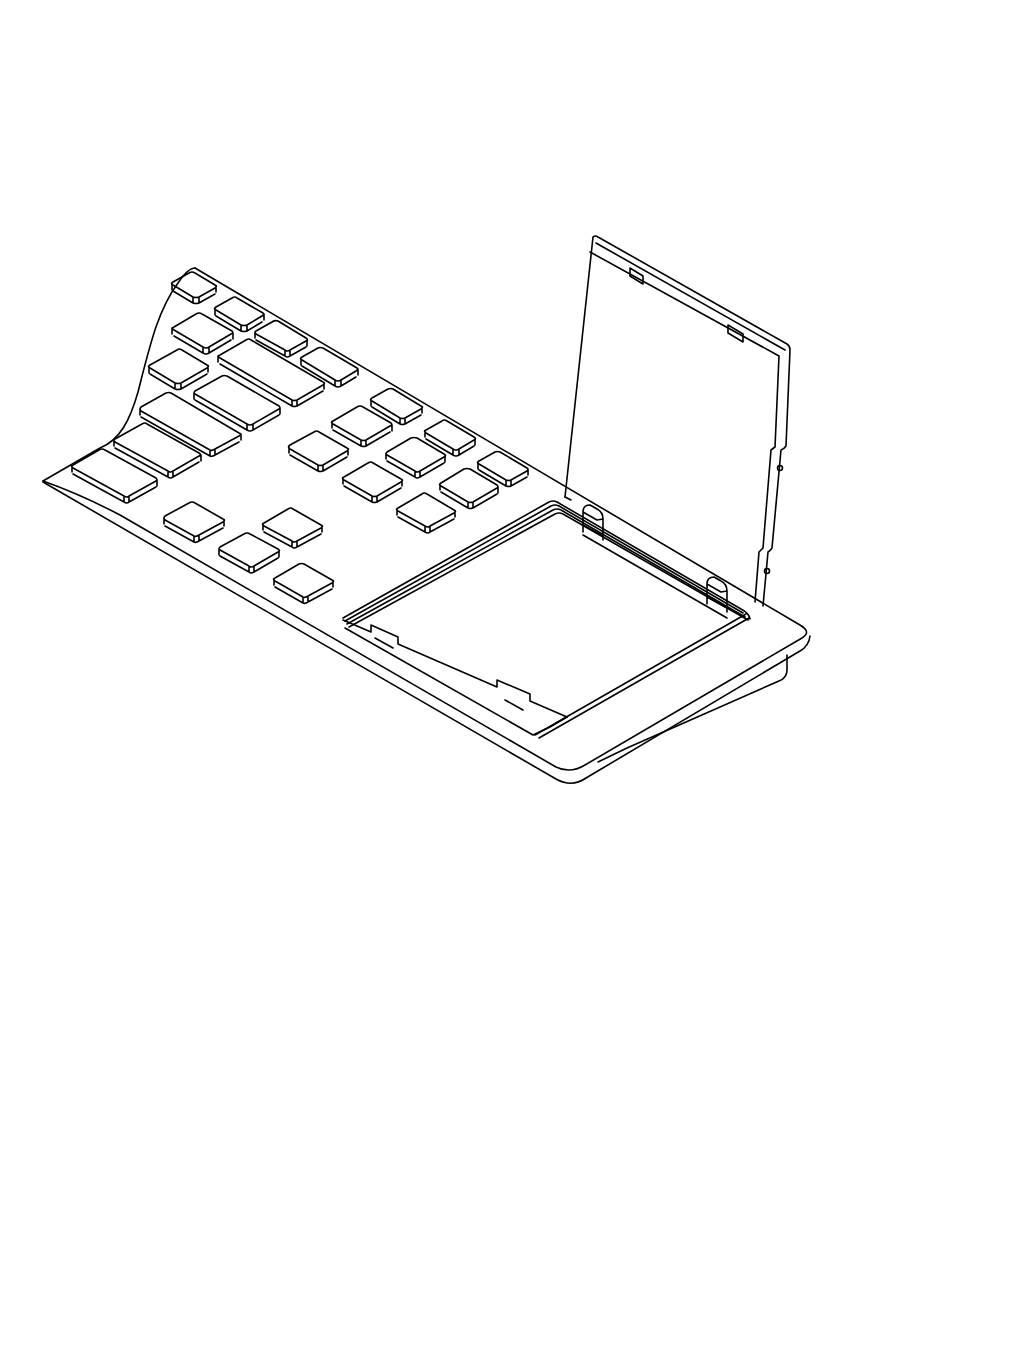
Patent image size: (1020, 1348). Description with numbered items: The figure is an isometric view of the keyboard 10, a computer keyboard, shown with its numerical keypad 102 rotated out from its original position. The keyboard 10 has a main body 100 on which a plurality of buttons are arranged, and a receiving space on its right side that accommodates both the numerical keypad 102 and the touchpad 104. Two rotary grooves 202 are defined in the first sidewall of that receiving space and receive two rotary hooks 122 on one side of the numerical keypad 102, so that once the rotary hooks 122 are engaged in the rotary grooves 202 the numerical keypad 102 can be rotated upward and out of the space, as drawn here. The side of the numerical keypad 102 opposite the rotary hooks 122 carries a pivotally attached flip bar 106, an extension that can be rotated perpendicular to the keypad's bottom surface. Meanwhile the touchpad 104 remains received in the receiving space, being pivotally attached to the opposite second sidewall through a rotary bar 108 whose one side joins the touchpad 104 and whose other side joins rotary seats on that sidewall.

The keyboard 10 is at (303, 82).
The main body 100 is at (357, 380).
The numerical keypad 102 is at (760, 411).
The touchpad 104 is at (633, 648).
The flip bar 106 is at (680, 290).
The rotary bar 108 is at (455, 678).
The rotary hooks 122 is at (716, 582).
The rotary grooves 202 is at (735, 624).